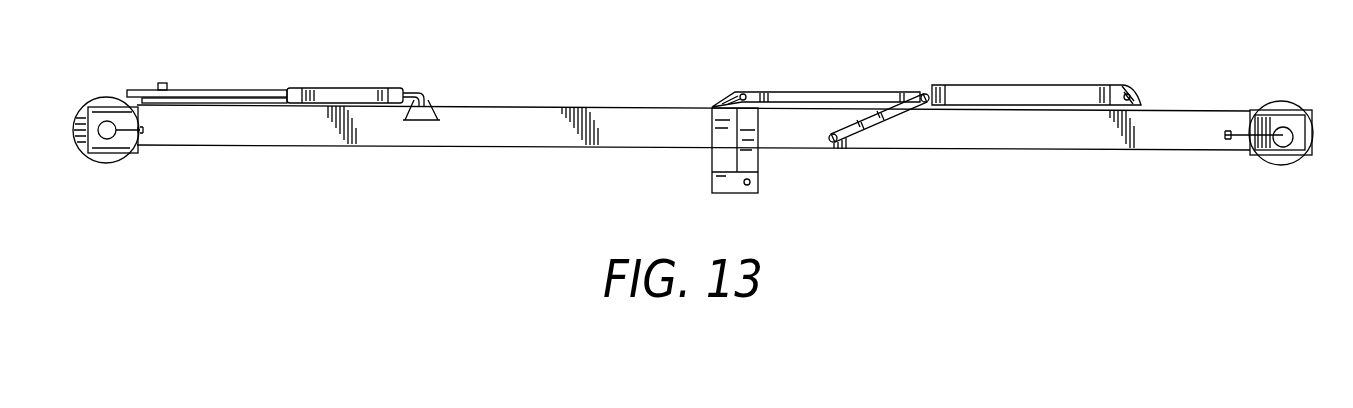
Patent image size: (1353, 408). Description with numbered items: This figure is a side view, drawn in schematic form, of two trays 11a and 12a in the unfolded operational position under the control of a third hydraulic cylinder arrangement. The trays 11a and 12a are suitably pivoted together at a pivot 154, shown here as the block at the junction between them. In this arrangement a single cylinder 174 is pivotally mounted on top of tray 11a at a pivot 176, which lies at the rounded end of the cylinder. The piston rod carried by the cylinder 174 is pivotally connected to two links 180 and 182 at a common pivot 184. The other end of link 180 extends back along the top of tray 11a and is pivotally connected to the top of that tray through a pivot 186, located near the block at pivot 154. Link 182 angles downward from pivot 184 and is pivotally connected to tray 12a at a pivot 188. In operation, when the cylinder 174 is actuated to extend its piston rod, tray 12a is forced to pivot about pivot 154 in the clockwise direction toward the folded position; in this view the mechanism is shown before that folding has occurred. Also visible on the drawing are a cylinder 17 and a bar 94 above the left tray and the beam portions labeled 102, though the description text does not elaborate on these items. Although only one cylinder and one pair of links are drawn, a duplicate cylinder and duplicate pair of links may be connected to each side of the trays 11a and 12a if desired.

The tray 11a is at (338, 148).
The tray 12a is at (1022, 149).
The hydraulic cylinder 17 is at (342, 92).
The bar 94 is at (191, 103).
The boom beam 102 is at (480, 122).
The pivot 154 is at (747, 186).
The cylinder 174 is at (1015, 97).
The pivot 176 is at (1131, 93).
The link 180 is at (808, 92).
The link 182 is at (882, 125).
The pivot 184 is at (925, 93).
The pivot 186 is at (745, 93).
The pivot 188 is at (830, 145).